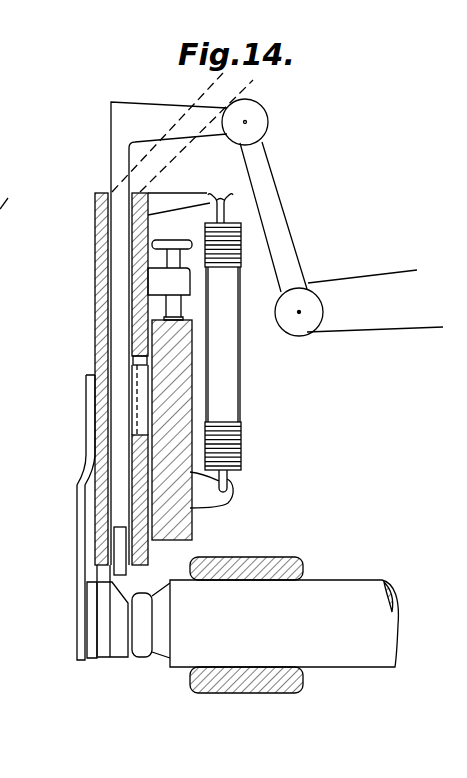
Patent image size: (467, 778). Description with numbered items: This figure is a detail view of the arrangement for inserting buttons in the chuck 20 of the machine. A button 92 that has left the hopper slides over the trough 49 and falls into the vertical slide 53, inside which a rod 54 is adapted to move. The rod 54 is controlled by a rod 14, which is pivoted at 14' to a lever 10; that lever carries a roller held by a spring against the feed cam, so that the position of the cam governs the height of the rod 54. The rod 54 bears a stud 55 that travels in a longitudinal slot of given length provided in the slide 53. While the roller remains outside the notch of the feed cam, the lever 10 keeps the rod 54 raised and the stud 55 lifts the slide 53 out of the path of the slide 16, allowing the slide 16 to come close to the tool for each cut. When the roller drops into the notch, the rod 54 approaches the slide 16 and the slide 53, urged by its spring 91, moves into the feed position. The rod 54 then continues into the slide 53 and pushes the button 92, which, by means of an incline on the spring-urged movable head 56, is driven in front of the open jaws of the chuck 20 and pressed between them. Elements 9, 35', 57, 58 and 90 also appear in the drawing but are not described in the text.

The frame 9 is at (23, 455).
The lever 10 is at (365, 290).
The rod 14 is at (292, 217).
The pivot 14' is at (334, 331).
The slide 16 is at (315, 600).
The chuck 20 is at (145, 652).
The guide plate 35' is at (48, 613).
The trough 49 is at (177, 147).
The vertical slide 53 is at (107, 304).
The rod 54 is at (118, 268).
The stud 55 is at (138, 360).
The movable head 56 is at (121, 632).
The spring plate 57 is at (82, 563).
The adjusting screw 58 is at (173, 257).
The slide block 90 is at (162, 339).
The spring 91 is at (223, 400).
The button 92 is at (120, 537).